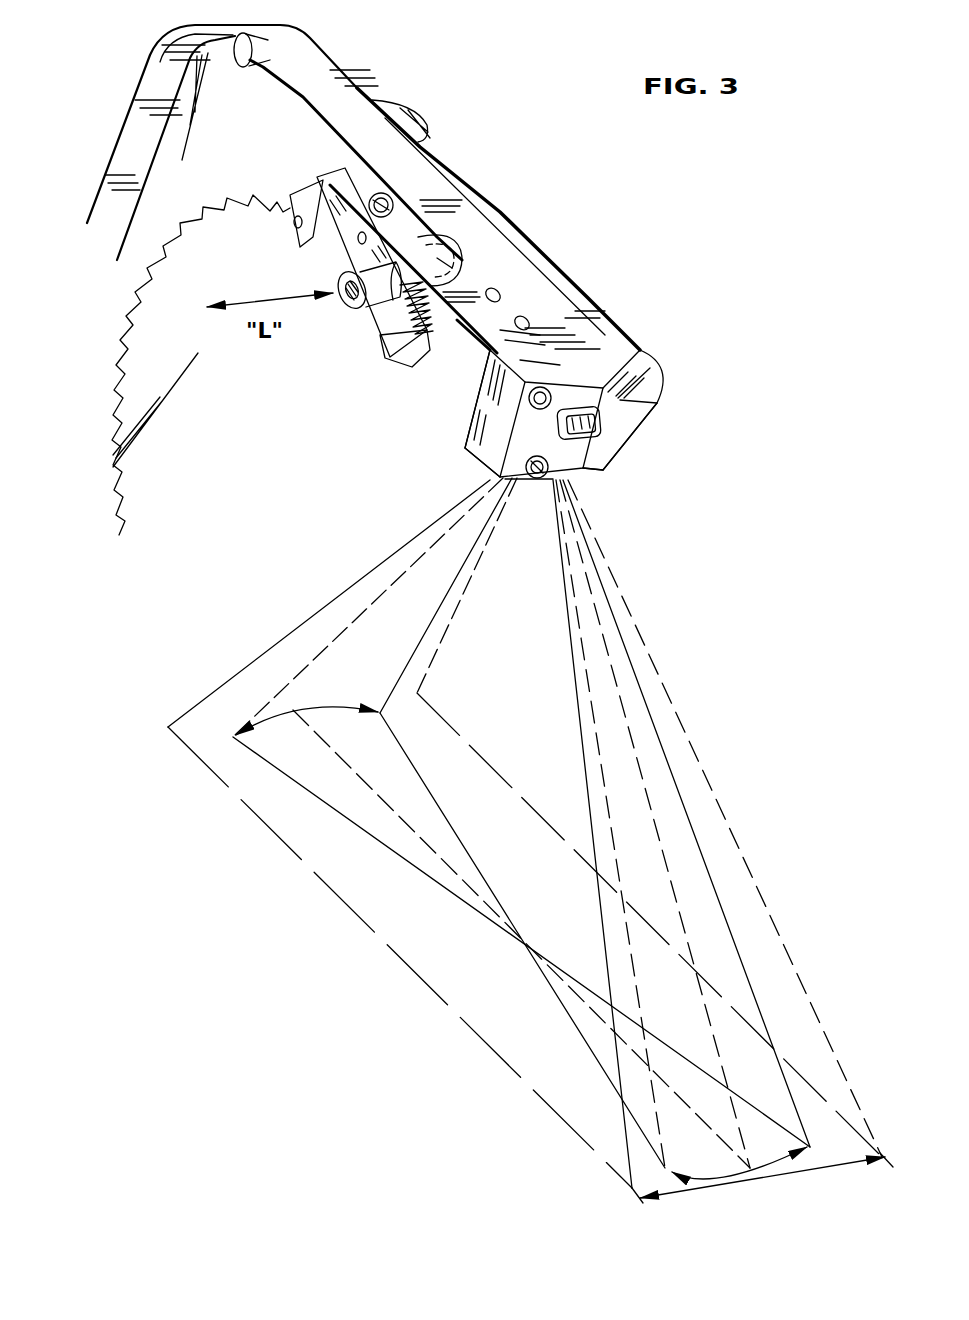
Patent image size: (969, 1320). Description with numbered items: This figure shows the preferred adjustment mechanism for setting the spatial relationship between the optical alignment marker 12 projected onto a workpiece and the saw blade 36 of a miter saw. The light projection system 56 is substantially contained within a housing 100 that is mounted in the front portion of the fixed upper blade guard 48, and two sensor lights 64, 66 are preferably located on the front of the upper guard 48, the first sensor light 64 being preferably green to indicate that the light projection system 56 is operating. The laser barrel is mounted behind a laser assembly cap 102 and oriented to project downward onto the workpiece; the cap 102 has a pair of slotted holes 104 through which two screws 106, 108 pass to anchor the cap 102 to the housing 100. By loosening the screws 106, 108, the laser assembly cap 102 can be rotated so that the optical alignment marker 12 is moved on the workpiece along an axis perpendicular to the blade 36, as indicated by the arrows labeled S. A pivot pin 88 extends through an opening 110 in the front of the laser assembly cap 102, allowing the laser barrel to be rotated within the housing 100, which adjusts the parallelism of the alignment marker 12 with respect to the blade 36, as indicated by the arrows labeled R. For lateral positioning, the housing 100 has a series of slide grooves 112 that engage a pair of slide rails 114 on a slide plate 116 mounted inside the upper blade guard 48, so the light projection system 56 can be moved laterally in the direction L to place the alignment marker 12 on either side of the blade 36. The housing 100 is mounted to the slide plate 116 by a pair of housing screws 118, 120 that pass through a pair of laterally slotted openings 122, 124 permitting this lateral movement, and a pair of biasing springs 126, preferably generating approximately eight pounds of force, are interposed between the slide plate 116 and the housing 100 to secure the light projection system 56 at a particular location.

The optical alignment marker 12 is at (372, 956).
The blade 36 is at (120, 302).
The upper blade guard 48 is at (492, 208).
The light projection system 56 is at (590, 484).
The first sensor light 64 is at (530, 322).
The sensor light 66 is at (500, 292).
The pivot pin 88 is at (597, 418).
The housing 100 is at (476, 392).
The laser assembly cap 102 is at (478, 460).
The slotted holes 104 is at (560, 382).
The screw 106 is at (528, 397).
The screw 108 is at (533, 487).
The opening 110 is at (600, 445).
The slide grooves 112 is at (290, 200).
The slide rails 114 is at (410, 340).
The slide plate 116 is at (367, 327).
The housing screw 118 is at (392, 200).
The housing screw 120 is at (443, 262).
The laterally slotted opening 122 is at (323, 183).
The laterally slotted opening 124 is at (440, 235).
The biasing springs 126 is at (385, 343).